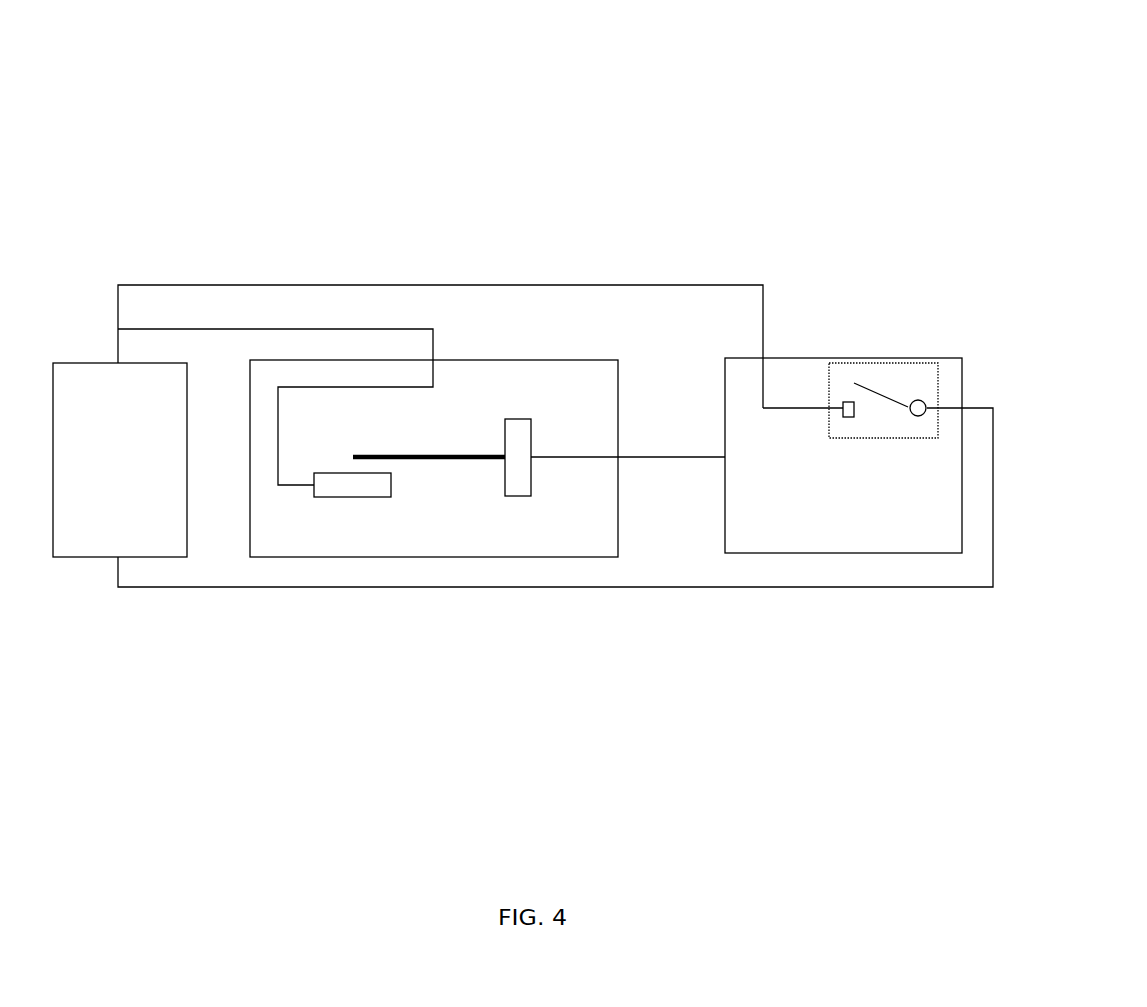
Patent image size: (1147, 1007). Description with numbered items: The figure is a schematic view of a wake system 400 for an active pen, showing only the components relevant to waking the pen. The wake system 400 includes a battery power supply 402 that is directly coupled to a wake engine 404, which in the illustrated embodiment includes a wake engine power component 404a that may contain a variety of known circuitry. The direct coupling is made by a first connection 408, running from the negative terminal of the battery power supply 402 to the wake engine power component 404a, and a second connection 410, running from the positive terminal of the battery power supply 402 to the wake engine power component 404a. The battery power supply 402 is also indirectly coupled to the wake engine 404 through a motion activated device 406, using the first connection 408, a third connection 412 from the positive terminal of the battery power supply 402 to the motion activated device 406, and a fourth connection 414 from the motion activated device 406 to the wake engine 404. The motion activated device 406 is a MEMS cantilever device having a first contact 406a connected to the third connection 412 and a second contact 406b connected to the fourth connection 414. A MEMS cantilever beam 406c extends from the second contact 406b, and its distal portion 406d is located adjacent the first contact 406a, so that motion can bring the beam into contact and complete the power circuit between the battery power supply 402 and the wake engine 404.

The wake system 400 is at (1022, 116).
The battery power supply 402 is at (137, 511).
The wake engine 404 is at (952, 544).
The wake engine power component 404a is at (883, 362).
The motion activated device 406 is at (602, 547).
The first contact 406a is at (391, 482).
The second contact 406b is at (532, 440).
The MEMS cantilever beam 406c is at (462, 457).
The distal portion 406d is at (348, 436).
The first connection 408 is at (542, 587).
The second connection 410 is at (503, 285).
The third connection 412 is at (215, 329).
The fourth connection 414 is at (658, 457).